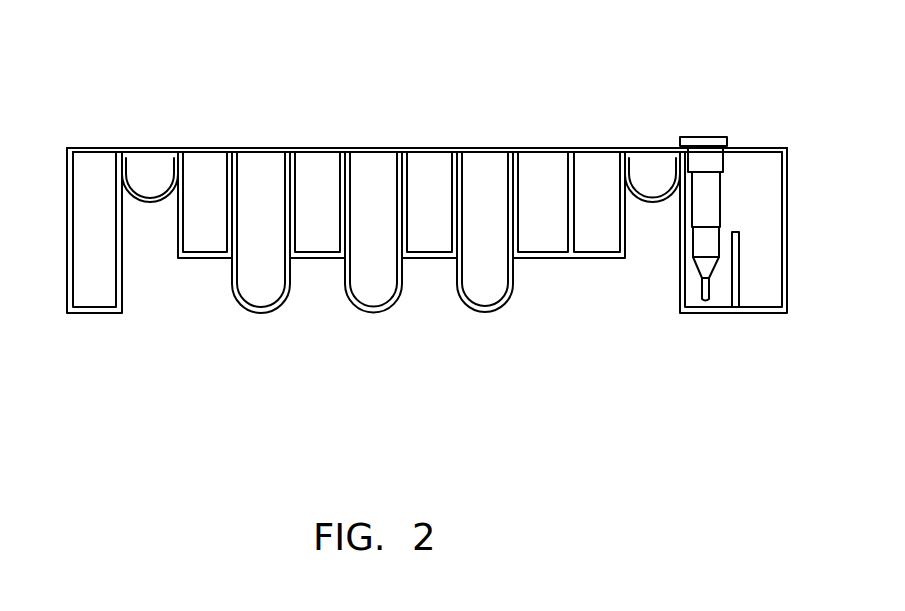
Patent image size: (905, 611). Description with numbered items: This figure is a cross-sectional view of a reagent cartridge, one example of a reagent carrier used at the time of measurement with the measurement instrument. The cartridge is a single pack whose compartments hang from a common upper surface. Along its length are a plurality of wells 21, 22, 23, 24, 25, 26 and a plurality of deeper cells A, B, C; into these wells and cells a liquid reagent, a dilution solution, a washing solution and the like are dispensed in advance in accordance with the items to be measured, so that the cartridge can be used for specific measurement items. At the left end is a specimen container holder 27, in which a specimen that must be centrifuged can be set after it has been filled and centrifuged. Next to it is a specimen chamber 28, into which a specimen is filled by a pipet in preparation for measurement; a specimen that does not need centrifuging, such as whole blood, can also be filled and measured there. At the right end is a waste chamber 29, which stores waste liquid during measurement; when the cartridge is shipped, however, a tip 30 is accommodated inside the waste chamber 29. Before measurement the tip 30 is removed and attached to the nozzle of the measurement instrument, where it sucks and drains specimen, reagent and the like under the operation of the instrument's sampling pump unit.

The well 21 is at (202, 148).
The well 22 is at (315, 148).
The well 23 is at (422, 148).
The well 24 is at (540, 148).
The well 25 is at (592, 148).
The well 26 is at (650, 203).
The specimen container holder 27 is at (92, 148).
The specimen chamber 28 is at (150, 203).
The waste chamber 29 is at (755, 147).
The tip 30 is at (700, 137).
The cell A is at (261, 314).
The cell B is at (373, 314).
The cell C is at (485, 314).